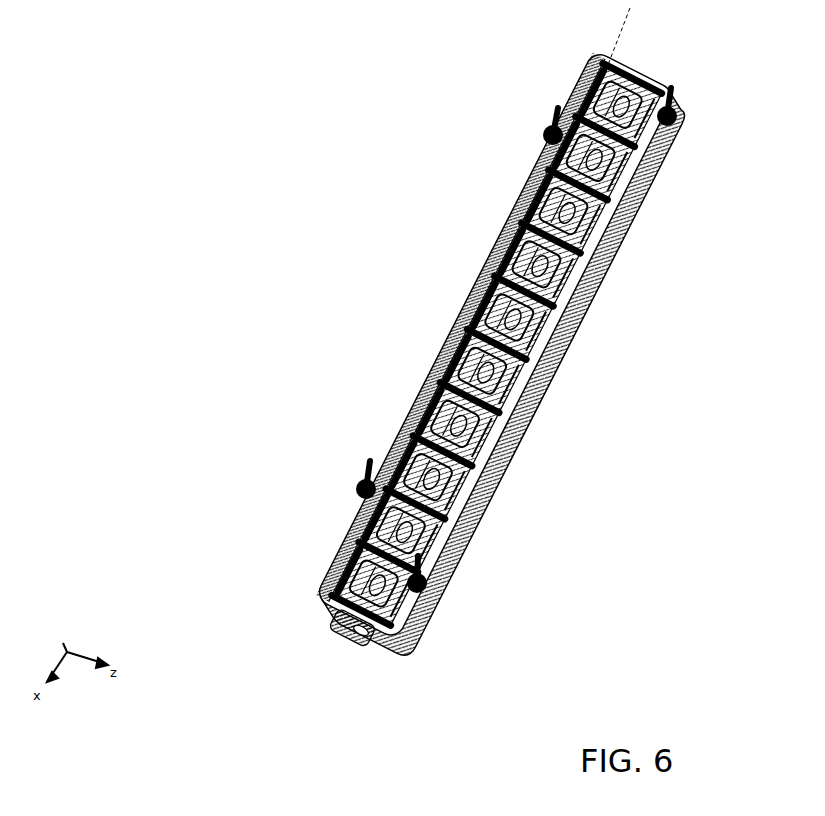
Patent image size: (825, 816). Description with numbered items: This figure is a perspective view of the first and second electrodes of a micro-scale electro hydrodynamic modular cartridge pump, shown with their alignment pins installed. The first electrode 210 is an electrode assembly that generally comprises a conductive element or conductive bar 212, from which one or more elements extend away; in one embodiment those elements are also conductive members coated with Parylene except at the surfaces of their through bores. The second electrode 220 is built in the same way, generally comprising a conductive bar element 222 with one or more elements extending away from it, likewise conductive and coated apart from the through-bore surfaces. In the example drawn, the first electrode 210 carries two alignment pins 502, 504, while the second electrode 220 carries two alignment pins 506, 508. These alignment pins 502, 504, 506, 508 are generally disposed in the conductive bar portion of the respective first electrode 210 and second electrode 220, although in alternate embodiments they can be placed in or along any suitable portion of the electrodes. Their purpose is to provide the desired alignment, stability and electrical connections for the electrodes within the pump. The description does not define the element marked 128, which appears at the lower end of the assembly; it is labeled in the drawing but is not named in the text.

The tab 128 is at (340, 642).
The first electrode 210 is at (603, 264).
The conductive bar 212 is at (535, 371).
The second electrode 220 is at (488, 246).
The conductive bar element 222 is at (452, 318).
The alignment pin 502 is at (673, 100).
The alignment pin 504 is at (420, 573).
The alignment pin 506 is at (553, 131).
The alignment pin 508 is at (367, 472).